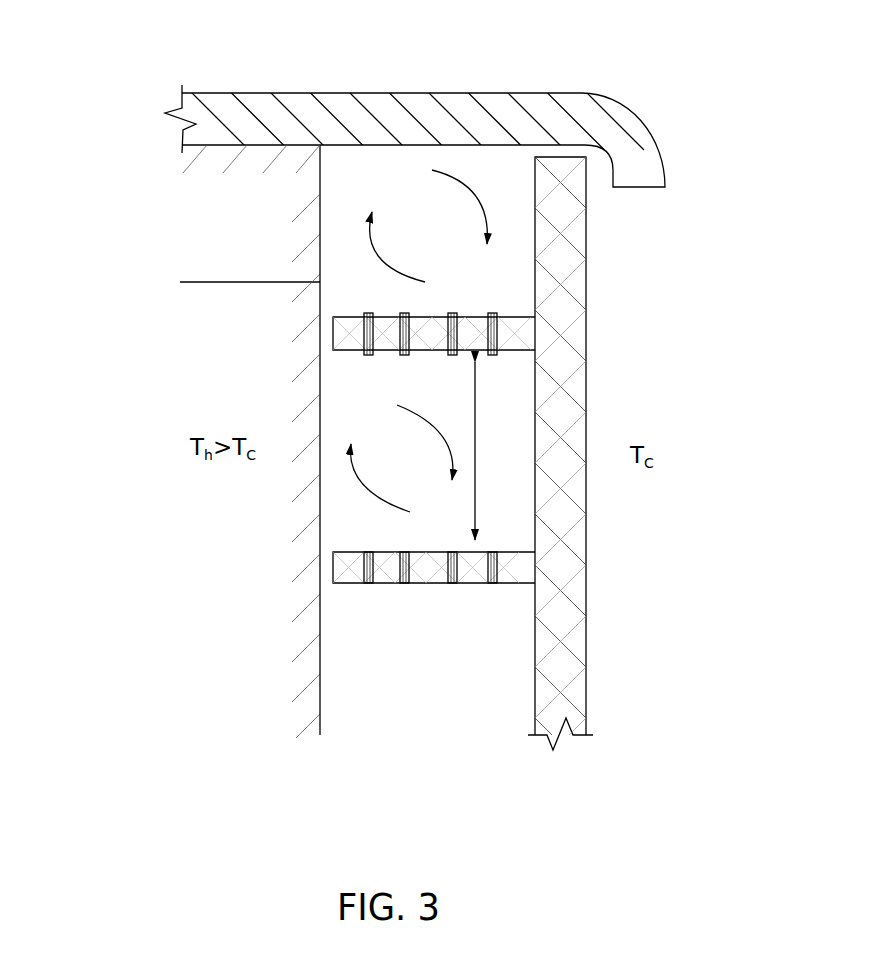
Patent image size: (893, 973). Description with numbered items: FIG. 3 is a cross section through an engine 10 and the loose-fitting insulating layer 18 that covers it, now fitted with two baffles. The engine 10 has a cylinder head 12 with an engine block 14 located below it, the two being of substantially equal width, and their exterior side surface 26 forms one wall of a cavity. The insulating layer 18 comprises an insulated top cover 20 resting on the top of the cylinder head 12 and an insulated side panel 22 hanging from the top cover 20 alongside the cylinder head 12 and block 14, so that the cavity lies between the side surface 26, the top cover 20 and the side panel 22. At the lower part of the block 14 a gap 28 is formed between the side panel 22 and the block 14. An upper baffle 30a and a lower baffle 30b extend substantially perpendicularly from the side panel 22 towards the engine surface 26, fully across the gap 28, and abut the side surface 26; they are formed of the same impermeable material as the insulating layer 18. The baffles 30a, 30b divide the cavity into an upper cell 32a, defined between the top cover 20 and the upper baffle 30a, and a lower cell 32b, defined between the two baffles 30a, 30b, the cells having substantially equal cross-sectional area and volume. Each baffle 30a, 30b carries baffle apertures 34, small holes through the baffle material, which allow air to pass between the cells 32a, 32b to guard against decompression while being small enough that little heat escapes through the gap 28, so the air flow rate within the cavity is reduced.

The engine 10 is at (116, 386).
The cylinder head 12 is at (255, 236).
The engine block 14 is at (253, 524).
The insulating layer 18 is at (652, 107).
The top cover 20 is at (566, 93).
The side panel 22 is at (588, 648).
The exterior side surface 26 is at (320, 170).
The gap 28 is at (437, 760).
The upper baffle 30a is at (466, 318).
The lower baffle 30b is at (435, 585).
The upper cell 32a is at (445, 232).
The lower cell 32b is at (420, 466).
The baffle apertures 34 is at (497, 353).